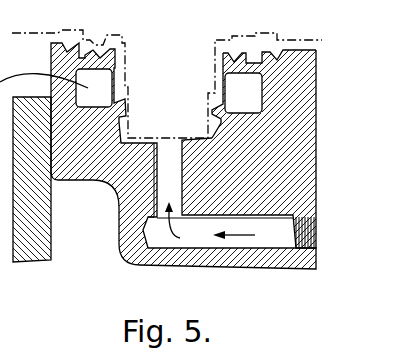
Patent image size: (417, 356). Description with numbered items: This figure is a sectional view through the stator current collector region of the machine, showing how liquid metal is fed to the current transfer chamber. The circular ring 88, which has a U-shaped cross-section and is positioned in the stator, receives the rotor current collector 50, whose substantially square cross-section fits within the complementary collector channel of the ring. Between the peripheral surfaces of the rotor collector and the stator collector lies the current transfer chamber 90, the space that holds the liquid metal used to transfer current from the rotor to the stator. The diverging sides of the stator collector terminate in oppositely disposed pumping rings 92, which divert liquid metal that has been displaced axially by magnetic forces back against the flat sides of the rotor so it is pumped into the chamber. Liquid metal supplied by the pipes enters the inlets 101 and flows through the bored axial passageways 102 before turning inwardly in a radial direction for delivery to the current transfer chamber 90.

The rotor current collector 50 is at (184, 77).
The circular ring 88 is at (303, 63).
The current transfer chamber 90 is at (103, 187).
The pumping rings 92 is at (222, 98).
The inlets 101 is at (314, 235).
The bored axial passageways 102 is at (254, 242).